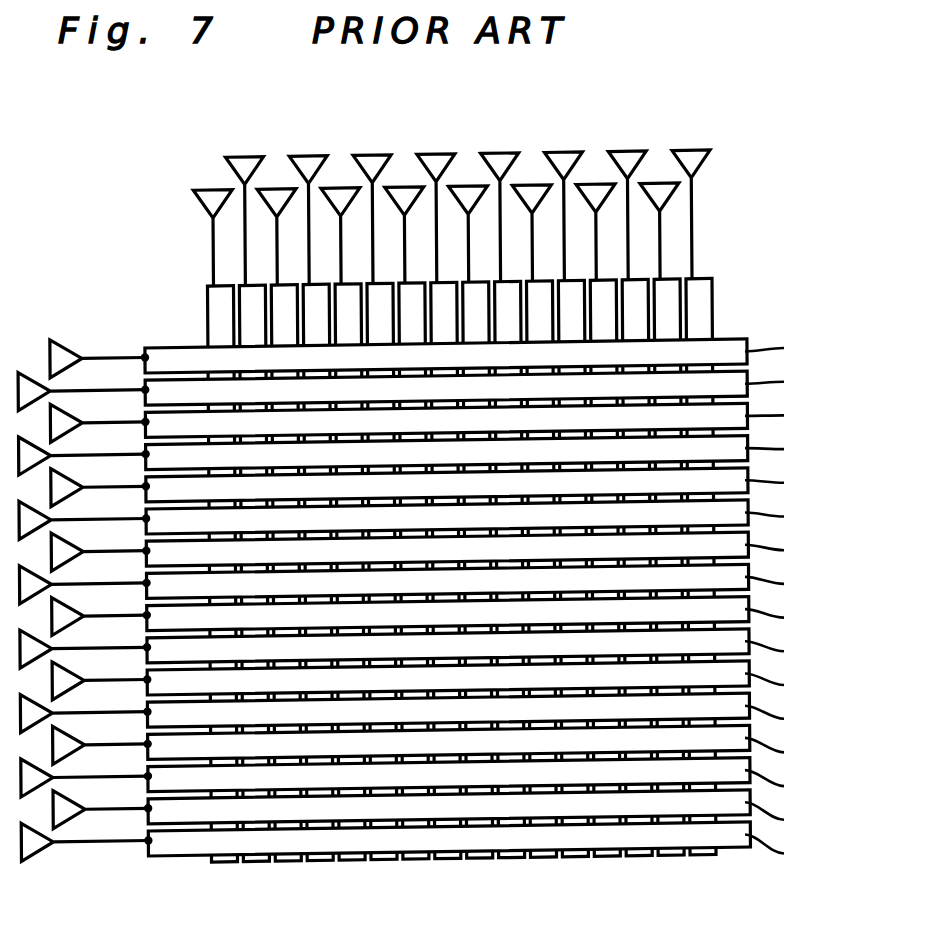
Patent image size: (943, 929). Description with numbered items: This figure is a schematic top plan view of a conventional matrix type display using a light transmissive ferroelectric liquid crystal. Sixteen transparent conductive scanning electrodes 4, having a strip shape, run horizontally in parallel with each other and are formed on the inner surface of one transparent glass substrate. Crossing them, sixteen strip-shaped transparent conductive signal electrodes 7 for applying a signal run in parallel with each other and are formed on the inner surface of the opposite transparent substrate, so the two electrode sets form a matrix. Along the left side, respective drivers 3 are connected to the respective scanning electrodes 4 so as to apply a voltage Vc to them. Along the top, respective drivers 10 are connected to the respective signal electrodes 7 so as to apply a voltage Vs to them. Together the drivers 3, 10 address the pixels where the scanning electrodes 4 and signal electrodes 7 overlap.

The driver 3 is at (65, 357).
The scanning electrode 4 is at (830, 880).
The signal electrode 7 is at (218, 306).
The driver 10 is at (215, 194).